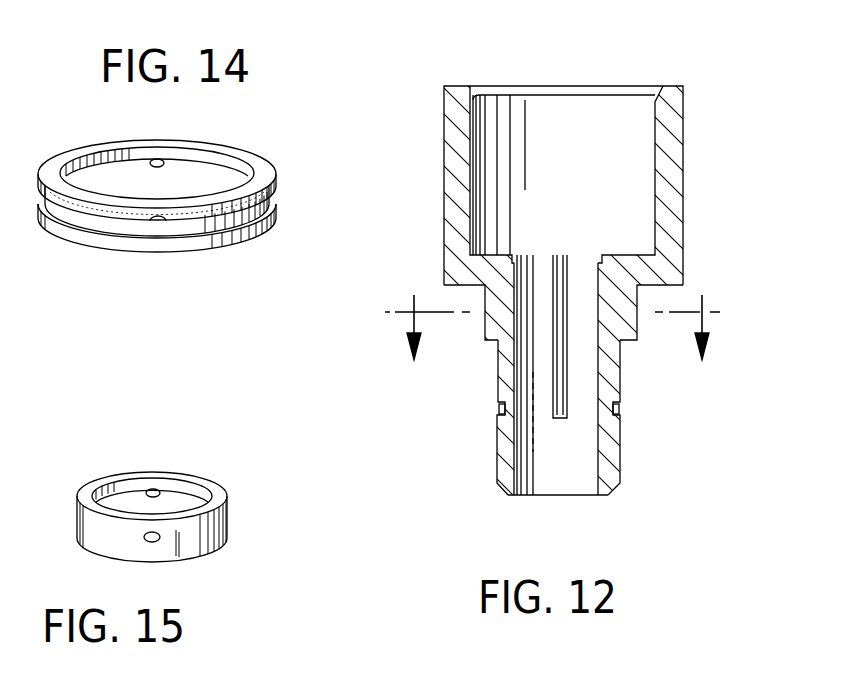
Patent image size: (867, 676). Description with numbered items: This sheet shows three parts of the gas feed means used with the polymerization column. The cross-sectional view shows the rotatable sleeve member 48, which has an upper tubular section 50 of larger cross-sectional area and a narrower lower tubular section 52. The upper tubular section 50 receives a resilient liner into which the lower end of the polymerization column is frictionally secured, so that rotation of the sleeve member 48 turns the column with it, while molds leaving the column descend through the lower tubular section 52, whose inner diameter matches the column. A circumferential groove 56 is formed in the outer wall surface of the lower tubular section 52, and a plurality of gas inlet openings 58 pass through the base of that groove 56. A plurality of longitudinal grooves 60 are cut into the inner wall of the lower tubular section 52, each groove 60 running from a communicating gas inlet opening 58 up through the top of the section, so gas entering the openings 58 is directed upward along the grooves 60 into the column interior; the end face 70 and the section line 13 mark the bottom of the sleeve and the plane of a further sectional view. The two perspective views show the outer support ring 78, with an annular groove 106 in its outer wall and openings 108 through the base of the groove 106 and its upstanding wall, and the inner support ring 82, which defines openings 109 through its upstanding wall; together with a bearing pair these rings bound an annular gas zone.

In FIG. 12, the rotatable sleeve member 48 is at (683, 237).
In FIG. 12, the upper tubular section 50 is at (683, 143).
In FIG. 12, the lower tubular section 52 is at (620, 450).
In FIG. 12, the circumferential groove 56 is at (498, 408).
In FIG. 12, the gas inlet openings 58 is at (620, 409).
In FIG. 12, the longitudinal grooves 60 is at (518, 283).
In FIG. 12, the bottom end face 70 is at (580, 496).
In FIG. 12, the section line 13- 13 is at (557, 324).
In FIG. 14, the outer support ring 78 is at (253, 151).
In FIG. 14, the annular groove 106 is at (268, 212).
In FIG. 14, the openings 108 is at (156, 159).
In FIG. 15, the inner support ring 82 is at (230, 511).
In FIG. 15, the openings 109 is at (149, 490).